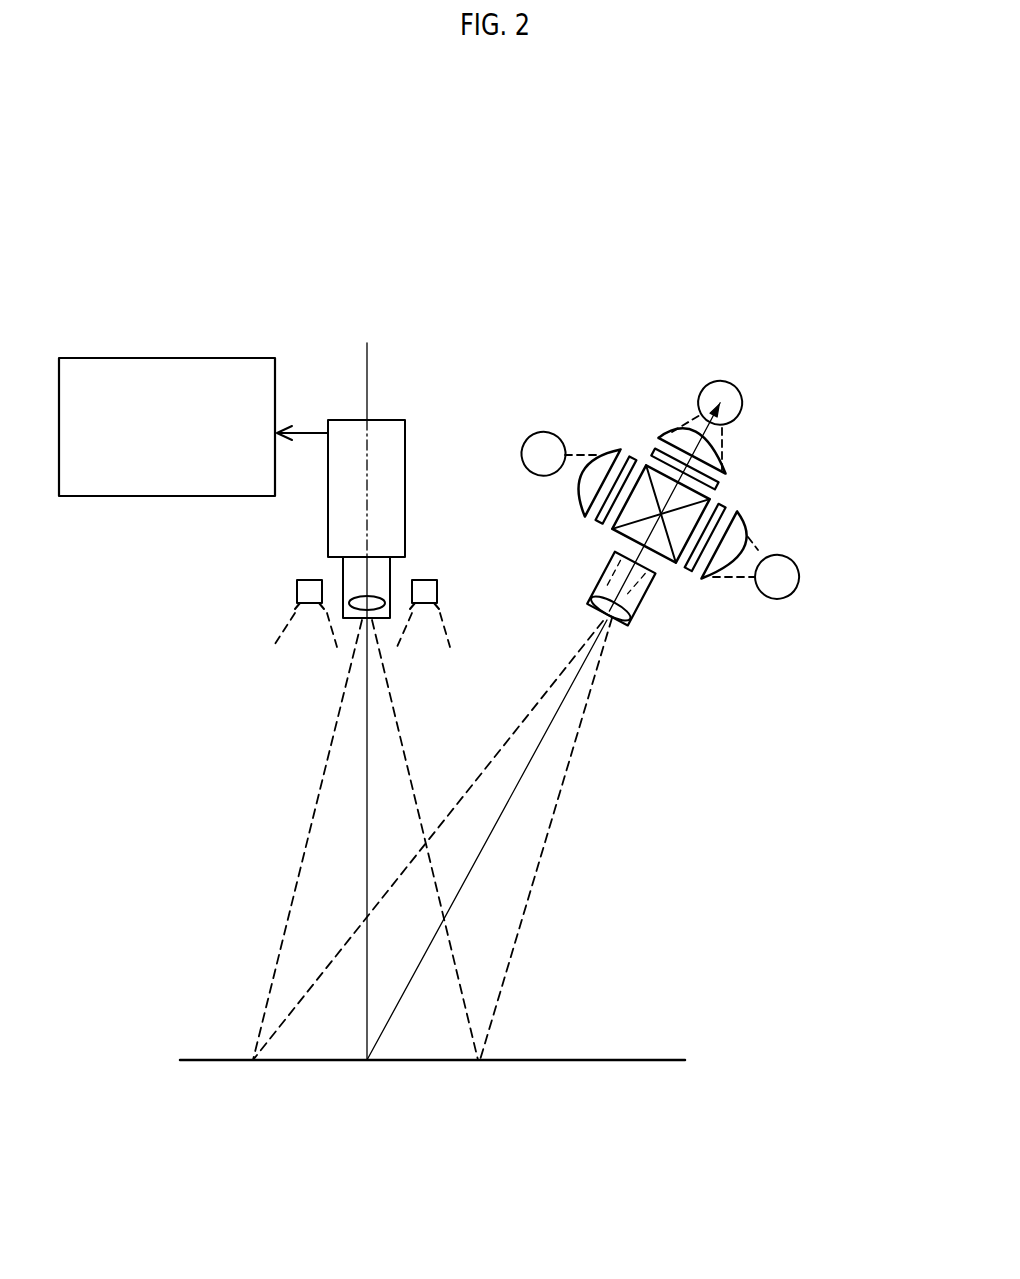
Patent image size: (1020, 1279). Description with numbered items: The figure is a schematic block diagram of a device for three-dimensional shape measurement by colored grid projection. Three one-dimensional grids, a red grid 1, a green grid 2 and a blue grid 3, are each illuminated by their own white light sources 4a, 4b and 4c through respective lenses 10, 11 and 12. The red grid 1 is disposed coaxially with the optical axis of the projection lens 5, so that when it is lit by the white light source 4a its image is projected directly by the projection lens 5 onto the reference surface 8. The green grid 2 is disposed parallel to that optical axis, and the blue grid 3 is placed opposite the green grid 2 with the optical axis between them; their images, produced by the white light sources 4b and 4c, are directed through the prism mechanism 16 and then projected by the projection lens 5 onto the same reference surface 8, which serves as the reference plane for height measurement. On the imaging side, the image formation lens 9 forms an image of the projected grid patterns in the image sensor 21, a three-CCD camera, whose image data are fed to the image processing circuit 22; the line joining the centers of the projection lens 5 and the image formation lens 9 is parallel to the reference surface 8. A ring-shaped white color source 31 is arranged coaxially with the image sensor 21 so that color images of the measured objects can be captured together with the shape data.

The red grid of one dimension 1 is at (715, 478).
The green grid of one dimension 2 is at (633, 473).
The blue grid of one dimension 3 is at (723, 512).
The white light source 4a is at (718, 388).
The white light source 4b is at (528, 440).
The white light source 4c is at (797, 583).
The projection lens 5 is at (630, 620).
The reference surface 8 is at (547, 1060).
The image formation lens 9 is at (375, 598).
The lens 10 is at (707, 452).
The lens 11 is at (597, 457).
The lens 12 is at (740, 530).
The prism mechanism 16 is at (674, 568).
The image sensor 21 is at (382, 430).
The image processing circuit 22 is at (238, 378).
The ring-shaped white color source 31 is at (310, 587).